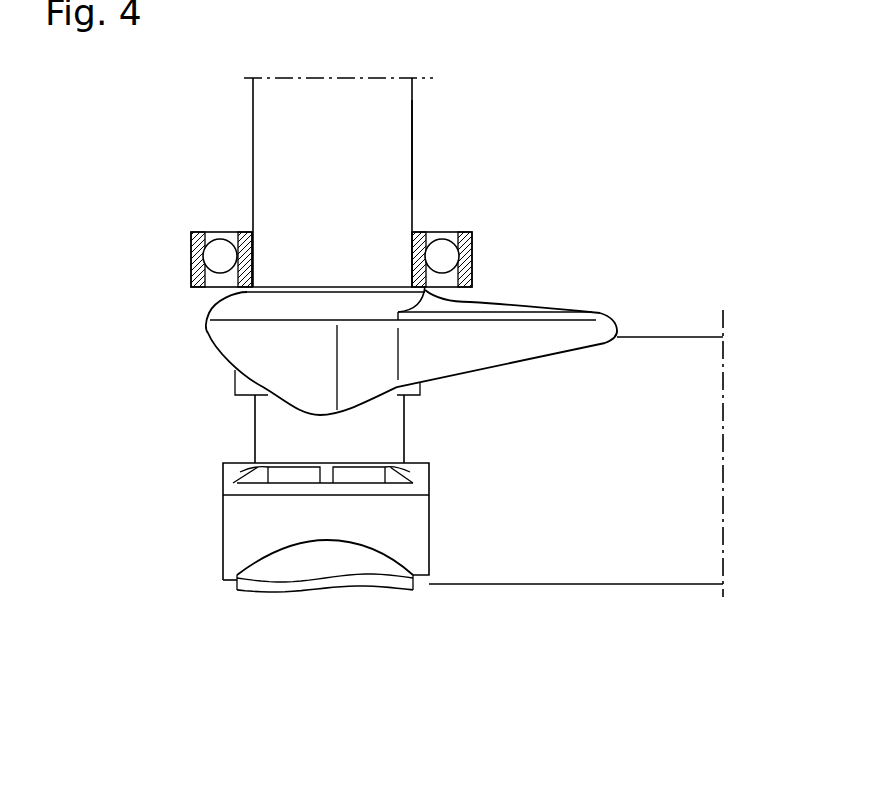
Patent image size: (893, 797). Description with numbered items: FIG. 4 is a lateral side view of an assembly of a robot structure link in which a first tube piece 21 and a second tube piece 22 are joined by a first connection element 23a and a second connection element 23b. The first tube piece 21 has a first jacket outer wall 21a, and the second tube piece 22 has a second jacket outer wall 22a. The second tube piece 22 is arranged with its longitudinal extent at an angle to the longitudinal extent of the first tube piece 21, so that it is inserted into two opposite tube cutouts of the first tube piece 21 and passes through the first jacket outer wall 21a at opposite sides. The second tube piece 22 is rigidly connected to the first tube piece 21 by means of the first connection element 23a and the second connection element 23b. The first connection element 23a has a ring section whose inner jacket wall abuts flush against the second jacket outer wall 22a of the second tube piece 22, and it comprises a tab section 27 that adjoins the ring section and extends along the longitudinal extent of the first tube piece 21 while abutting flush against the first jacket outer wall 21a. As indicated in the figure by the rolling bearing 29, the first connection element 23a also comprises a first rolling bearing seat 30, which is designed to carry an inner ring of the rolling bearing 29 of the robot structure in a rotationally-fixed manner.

The first tube piece 21 is at (422, 110).
The first jacket outer wall 21a is at (423, 183).
The second jacket outer wall 22a is at (357, 161).
The rolling bearing 29 is at (205, 232).
The first rolling bearing seat 30 is at (243, 288).
The first connection element 23a is at (546, 272).
The tab section 27 is at (580, 330).
The second connection element 23b is at (215, 538).
The second tube piece 22 is at (670, 595).